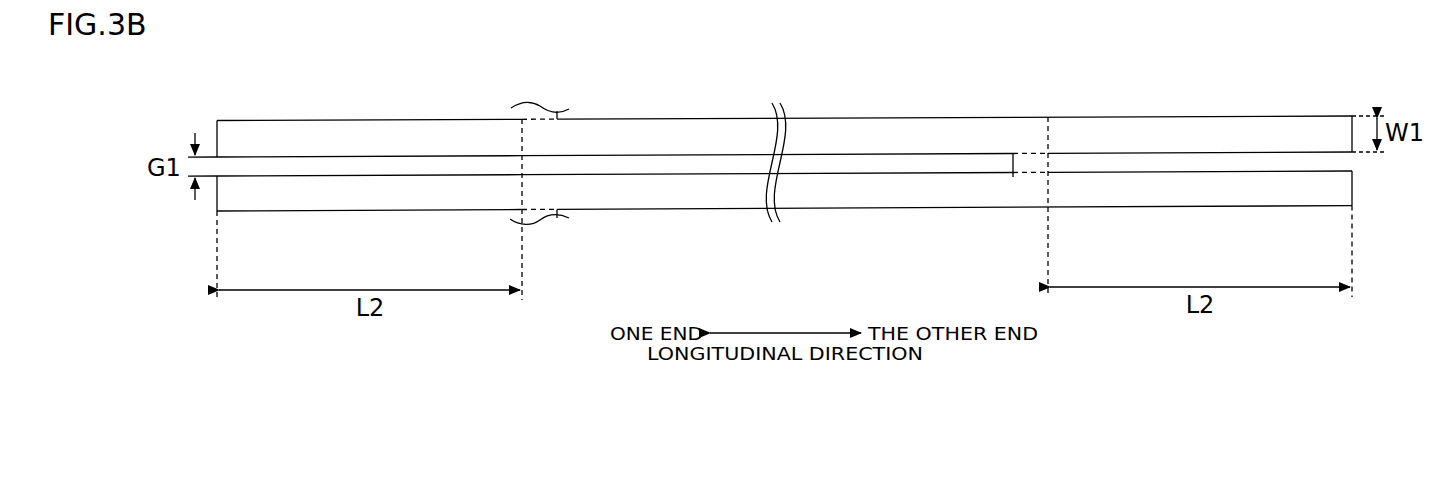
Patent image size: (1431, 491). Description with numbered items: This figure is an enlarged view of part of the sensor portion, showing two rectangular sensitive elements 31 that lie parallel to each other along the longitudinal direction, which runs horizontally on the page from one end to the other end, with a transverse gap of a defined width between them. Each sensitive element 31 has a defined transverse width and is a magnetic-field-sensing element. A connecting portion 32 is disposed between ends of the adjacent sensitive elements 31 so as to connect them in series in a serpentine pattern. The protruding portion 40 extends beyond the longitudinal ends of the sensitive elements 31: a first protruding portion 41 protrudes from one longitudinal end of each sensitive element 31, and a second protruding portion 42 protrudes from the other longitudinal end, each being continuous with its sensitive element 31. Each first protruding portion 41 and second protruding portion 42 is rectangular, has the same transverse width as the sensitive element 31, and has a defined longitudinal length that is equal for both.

The protruding portion 40 is at (787, 154).
The first protruding portion 41 is at (310, 126).
The second protruding portion 42 is at (1244, 122).
The sensitive element 31 is at (857, 124).
The connecting portion 32 is at (555, 113).